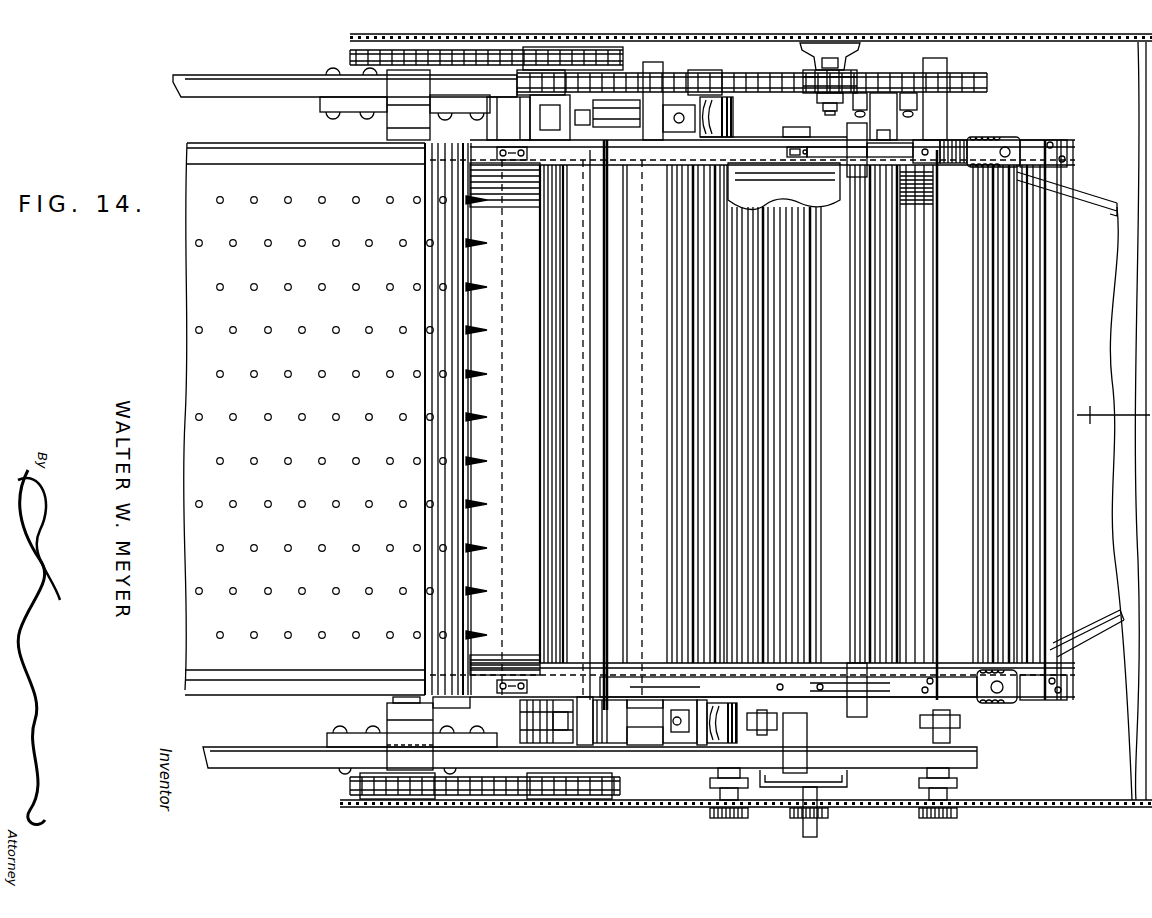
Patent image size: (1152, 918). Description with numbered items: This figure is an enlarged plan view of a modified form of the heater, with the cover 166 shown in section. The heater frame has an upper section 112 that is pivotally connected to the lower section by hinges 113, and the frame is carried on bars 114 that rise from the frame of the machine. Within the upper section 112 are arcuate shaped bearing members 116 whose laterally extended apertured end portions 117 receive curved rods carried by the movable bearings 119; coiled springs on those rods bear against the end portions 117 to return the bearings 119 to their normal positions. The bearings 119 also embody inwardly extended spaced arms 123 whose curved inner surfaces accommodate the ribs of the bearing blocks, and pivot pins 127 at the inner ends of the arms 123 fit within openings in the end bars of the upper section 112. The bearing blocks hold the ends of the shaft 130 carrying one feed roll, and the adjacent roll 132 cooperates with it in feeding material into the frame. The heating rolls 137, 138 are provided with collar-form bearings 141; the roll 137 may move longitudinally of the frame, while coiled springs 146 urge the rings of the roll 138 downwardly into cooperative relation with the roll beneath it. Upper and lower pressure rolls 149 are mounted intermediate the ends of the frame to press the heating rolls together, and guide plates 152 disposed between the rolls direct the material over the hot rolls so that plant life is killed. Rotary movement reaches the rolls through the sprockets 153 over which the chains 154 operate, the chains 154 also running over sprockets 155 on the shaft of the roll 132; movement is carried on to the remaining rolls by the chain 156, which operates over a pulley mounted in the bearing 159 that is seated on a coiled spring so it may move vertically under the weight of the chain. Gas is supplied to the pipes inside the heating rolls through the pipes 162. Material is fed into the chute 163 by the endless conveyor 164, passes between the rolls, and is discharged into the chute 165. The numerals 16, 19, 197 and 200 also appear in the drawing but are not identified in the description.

The perforation 16 is at (360, 426).
The shaft 19 is at (829, 112).
The upper section 112 is at (1082, 671).
The hinges 113 is at (528, 678).
The bars 114 is at (393, 110).
The arcuate shaped bearing members 116 is at (699, 706).
The apertured end portions 117 is at (676, 131).
The movable bearings 119 is at (735, 121).
The spaced arms 123 is at (631, 720).
The pivot pins 127 is at (541, 740).
The shaft 130 is at (698, 71).
The roll 132 is at (546, 406).
The heating roll 137 is at (796, 509).
The heating roll 138 is at (982, 414).
The bearings 141 is at (849, 700).
The coiled springs 146 is at (1000, 136).
The pressure rolls 149 is at (862, 414).
The guide plates 152 is at (784, 186).
The sprockets 153 is at (545, 98).
The chains 154 is at (778, 70).
The sprockets 155 is at (880, 78).
The chain 156 is at (702, 80).
The bearing 159 is at (932, 60).
The pipes 162 is at (848, 778).
The chute 163 is at (449, 419).
The endless conveyor 164 is at (192, 314).
The chute 165 is at (1074, 486).
The cover 166 is at (1124, 44).
The bracket 197 is at (830, 56).
The bearing 200 is at (736, 143).